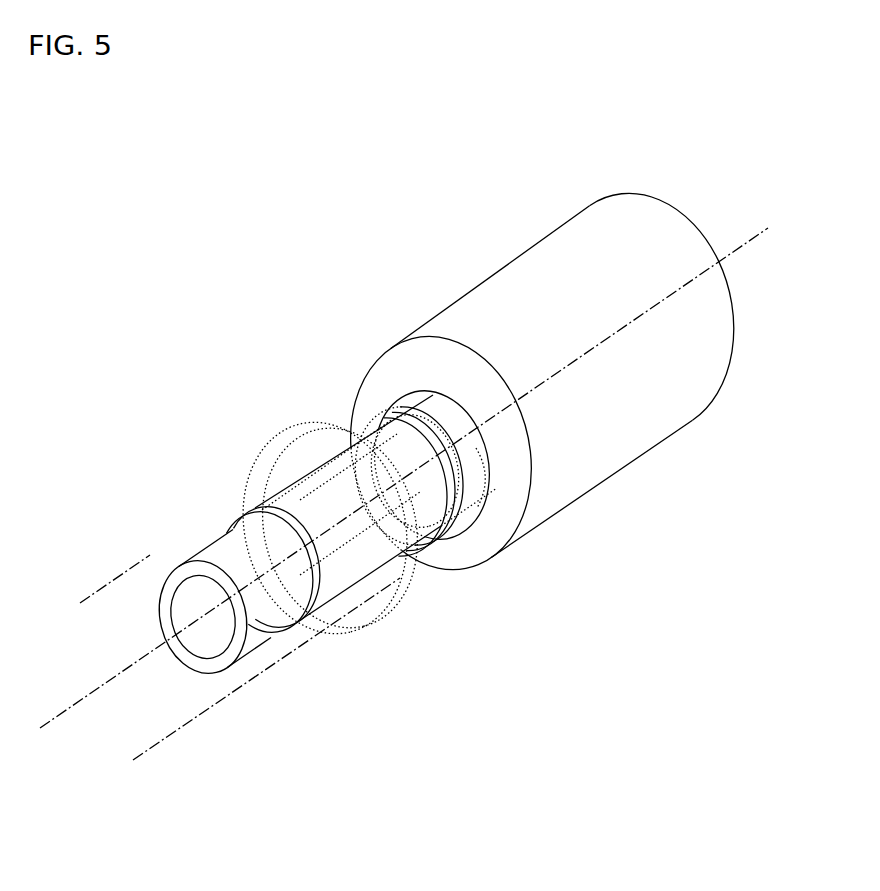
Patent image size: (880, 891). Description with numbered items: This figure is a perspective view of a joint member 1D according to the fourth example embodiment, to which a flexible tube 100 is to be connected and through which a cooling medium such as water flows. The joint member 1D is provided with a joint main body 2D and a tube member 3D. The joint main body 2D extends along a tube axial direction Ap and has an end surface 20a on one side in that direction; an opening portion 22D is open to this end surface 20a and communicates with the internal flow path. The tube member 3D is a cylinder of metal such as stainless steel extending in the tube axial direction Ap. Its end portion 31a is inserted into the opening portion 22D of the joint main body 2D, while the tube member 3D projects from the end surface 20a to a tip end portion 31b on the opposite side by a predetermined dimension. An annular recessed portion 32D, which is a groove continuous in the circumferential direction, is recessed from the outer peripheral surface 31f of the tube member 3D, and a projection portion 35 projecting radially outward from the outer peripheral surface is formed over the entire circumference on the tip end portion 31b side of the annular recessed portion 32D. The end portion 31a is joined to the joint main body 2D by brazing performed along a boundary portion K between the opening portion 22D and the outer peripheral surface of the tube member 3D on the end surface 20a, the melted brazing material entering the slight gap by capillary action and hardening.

The joint member 1D is at (441, 270).
The joint main body 2D is at (533, 370).
The end surface 20a is at (405, 360).
The opening portion 22D is at (478, 505).
The tube axial direction Ap is at (733, 250).
The boundary portion K is at (467, 393).
The tube member 3D is at (432, 567).
The end portion 31a is at (487, 433).
The tip end portion 31b is at (241, 645).
The outer peripheral surface 31f is at (345, 615).
The annular recessed portion 32D is at (463, 550).
The projection portion 35 is at (253, 495).
The flexible tube 100 is at (145, 556).